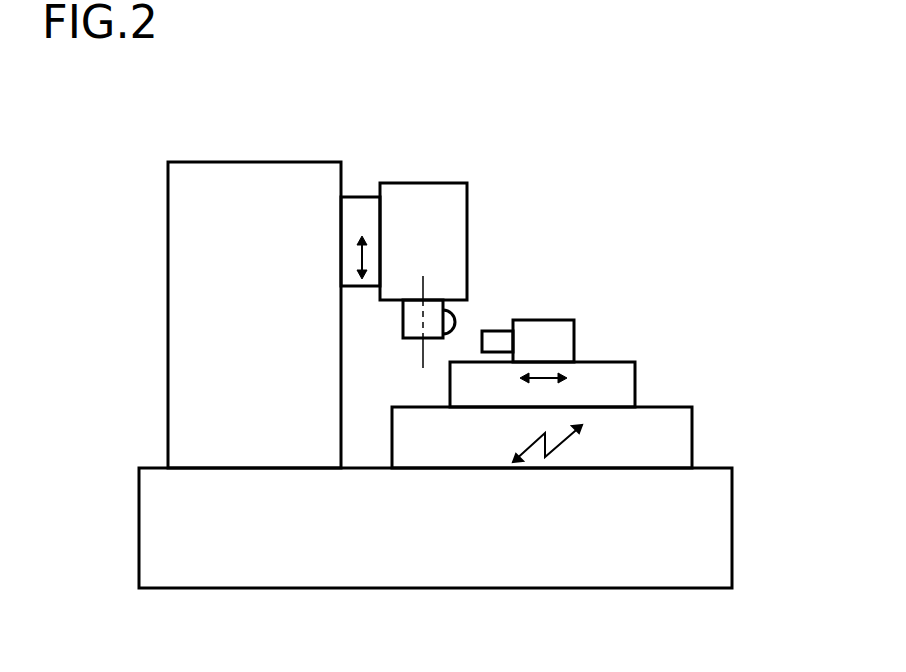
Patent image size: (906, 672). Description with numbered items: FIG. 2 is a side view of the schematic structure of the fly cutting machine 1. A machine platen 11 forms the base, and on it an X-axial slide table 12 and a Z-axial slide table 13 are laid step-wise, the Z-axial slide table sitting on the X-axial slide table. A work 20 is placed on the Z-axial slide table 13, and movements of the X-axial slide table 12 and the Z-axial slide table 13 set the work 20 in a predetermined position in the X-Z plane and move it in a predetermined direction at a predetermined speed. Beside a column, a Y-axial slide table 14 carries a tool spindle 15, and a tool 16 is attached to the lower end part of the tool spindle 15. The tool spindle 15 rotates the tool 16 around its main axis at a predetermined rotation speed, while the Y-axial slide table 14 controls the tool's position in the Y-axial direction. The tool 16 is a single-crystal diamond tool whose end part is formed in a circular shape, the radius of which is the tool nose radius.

The fly cutting machine 1 is at (606, 177).
The machine platen 11 is at (718, 510).
The X-axial slide table 12 is at (675, 445).
The Z-axial slide table 13 is at (622, 391).
The Y-axial slide table 14 is at (371, 205).
The tool spindle 15 is at (451, 202).
The tool 16 is at (455, 316).
The work 20 is at (572, 350).